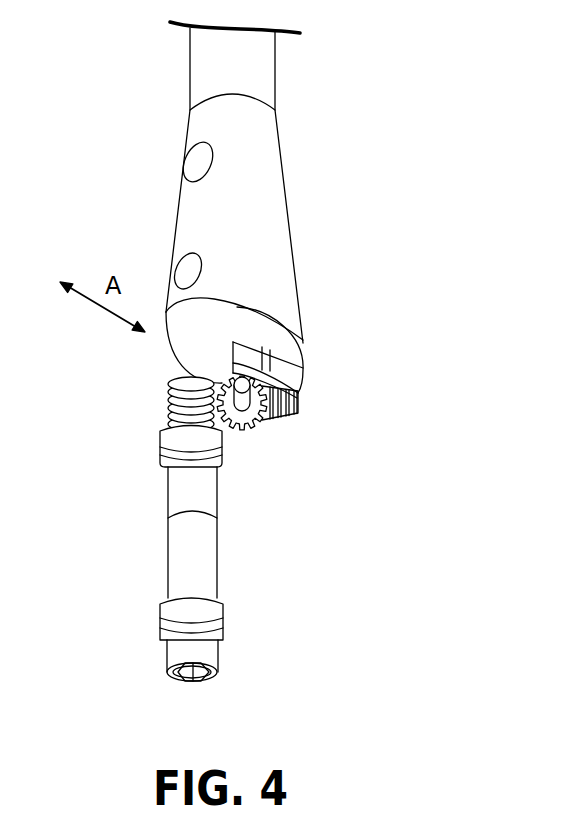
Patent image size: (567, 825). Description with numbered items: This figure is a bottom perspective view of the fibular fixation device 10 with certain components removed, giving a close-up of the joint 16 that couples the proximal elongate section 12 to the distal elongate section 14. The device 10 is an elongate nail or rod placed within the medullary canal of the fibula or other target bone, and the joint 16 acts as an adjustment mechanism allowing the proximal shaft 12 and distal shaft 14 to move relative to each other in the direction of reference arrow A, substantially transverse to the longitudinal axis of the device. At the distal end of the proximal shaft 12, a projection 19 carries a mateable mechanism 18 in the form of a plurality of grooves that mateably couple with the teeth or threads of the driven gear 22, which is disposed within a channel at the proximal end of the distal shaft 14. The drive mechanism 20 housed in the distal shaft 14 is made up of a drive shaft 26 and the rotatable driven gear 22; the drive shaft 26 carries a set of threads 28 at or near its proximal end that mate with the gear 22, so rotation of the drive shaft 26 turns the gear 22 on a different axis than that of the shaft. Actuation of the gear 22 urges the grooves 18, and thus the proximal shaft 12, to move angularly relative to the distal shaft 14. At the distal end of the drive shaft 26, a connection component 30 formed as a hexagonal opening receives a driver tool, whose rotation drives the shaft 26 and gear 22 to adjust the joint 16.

The fibular fixation device 10 is at (380, 100).
The proximal elongate section 12 is at (200, 87).
The distal elongate section 14 is at (57, 590).
The joint 16 is at (302, 499).
The mateable mechanism 18 is at (300, 405).
The projection 19 is at (292, 373).
The drive mechanism 20 is at (50, 428).
The driven gear 22 is at (240, 433).
The drive shaft 26 is at (215, 542).
The threads 28 is at (167, 408).
The connection component 30 is at (190, 676).